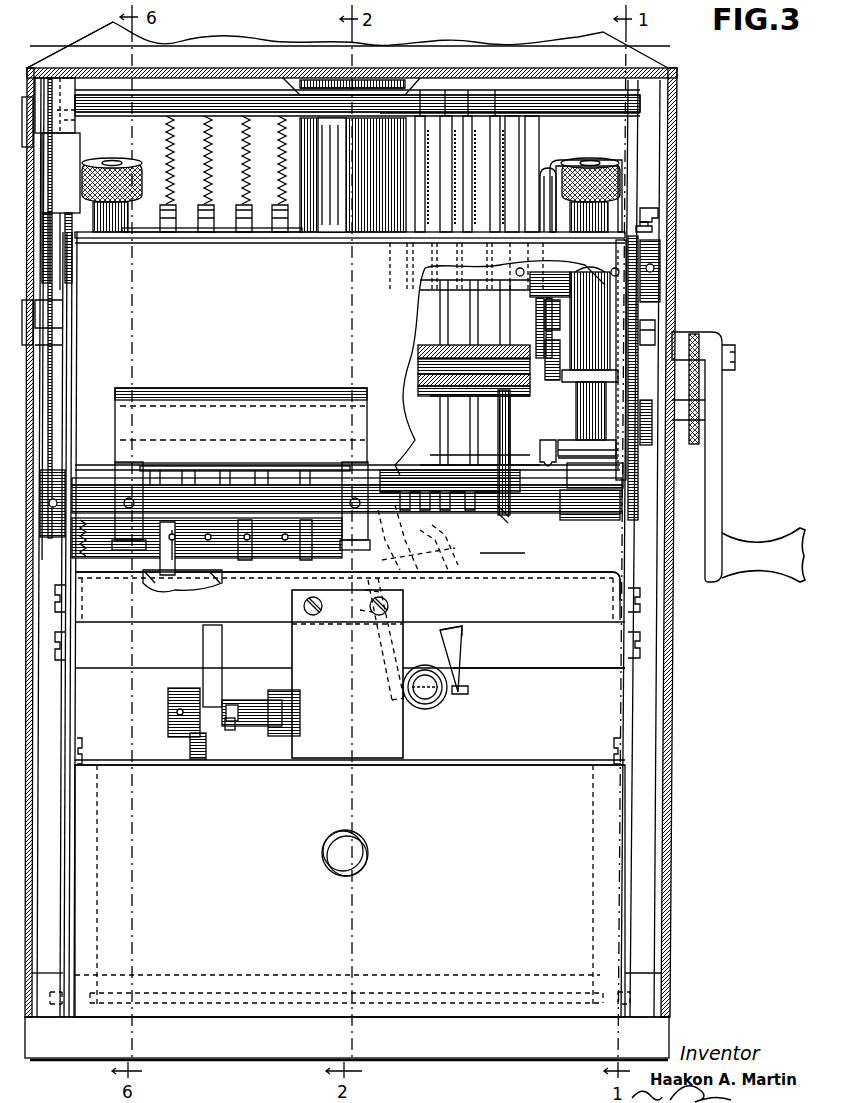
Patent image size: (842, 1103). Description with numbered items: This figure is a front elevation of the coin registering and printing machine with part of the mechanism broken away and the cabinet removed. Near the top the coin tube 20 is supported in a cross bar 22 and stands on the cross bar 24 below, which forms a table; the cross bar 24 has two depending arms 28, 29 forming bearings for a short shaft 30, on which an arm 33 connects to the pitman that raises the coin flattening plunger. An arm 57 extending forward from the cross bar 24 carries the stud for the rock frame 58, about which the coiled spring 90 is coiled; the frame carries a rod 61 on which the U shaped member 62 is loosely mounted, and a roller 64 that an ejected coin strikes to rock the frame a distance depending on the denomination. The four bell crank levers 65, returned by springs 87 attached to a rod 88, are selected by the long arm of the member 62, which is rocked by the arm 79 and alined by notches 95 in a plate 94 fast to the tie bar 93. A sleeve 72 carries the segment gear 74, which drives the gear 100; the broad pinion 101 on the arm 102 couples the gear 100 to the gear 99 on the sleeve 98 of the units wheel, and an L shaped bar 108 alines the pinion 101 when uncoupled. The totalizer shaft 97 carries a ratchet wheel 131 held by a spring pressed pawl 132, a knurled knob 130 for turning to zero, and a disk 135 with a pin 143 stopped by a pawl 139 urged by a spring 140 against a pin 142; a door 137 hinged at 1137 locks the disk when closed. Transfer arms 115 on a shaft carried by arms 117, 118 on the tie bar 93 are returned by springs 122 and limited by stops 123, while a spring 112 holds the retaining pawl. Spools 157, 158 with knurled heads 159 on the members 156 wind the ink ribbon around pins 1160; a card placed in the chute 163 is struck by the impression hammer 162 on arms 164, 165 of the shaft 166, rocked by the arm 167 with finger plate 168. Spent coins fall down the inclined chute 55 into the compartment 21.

The hinge 1137 is at (24, 97).
The door 137 is at (643, 67).
The finger plate 168 is at (55, 140).
The upwardly extending arm 167 is at (46, 345).
The knurled head 159 is at (98, 166).
The spool 158 is at (115, 225).
The spool 157 is at (607, 212).
The spring 112 is at (204, 170).
The chute 163 is at (232, 230).
The coin tube 20 is at (345, 230).
The springs 87 is at (485, 95).
The rod 88 is at (565, 95).
The cross bar 22 is at (548, 114).
The bell crank levers 65 is at (514, 182).
The L shaped bar 108 is at (560, 168).
The segment gear 74 is at (542, 200).
The spring 140 is at (656, 212).
The pin 142 is at (652, 229).
The pawl 139 is at (660, 280).
The spring pressed pawl 132 is at (622, 327).
The projecting pin 143 is at (652, 333).
The knurled knob 130 is at (697, 426).
The ratchet wheel 131 is at (626, 400).
The disk 135 is at (640, 430).
The member 156 is at (600, 455).
The broad pinion 101 is at (548, 275).
The gear 100 is at (566, 292).
The arm 102 is at (537, 306).
The gear 99 is at (538, 322).
The sleeve 98 is at (472, 362).
The shaft 97 is at (498, 368).
The pins 1160 is at (546, 455).
The sleeve 72 is at (568, 472).
The shaft 166 is at (573, 514).
The impression hammer 162 is at (212, 420).
The arm 165 is at (122, 490).
The arm 164 is at (345, 488).
The arm 115 is at (268, 480).
The arm 118 is at (165, 548).
The springs 122 is at (200, 576).
The overthrow preventing stops 123 is at (245, 530).
The arm 117 is at (330, 560).
The notches 95 is at (475, 510).
The arm 79 is at (506, 512).
The U shaped member 62 is at (385, 545).
The rod 61 is at (448, 552).
The plate 94 is at (495, 553).
The tie bar 93 is at (542, 583).
The roller 64 is at (370, 636).
The inclined chute 55 is at (392, 728).
The coiled spring 90 is at (442, 696).
The arm 57 is at (450, 638).
The rock frame 58 is at (452, 652).
The cross bar 24 is at (498, 663).
The depending arm 29 is at (210, 688).
The depending arm 28 is at (275, 688).
The short shaft 30 is at (232, 722).
The arm 33 is at (192, 735).
The compartment 21 is at (472, 770).